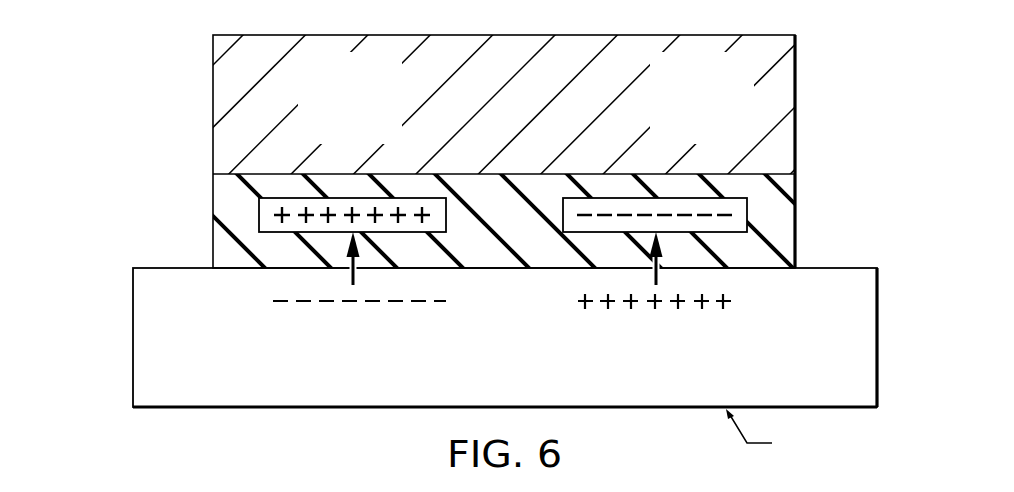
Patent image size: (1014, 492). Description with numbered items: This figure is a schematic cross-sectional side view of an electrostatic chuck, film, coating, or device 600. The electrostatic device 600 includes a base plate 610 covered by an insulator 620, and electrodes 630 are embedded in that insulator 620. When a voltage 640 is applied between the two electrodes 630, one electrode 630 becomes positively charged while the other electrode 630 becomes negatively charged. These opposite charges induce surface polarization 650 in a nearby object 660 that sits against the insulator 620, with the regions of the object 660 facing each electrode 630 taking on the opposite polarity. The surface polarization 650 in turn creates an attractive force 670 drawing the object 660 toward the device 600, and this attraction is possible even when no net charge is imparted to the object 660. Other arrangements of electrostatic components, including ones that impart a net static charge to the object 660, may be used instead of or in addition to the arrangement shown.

The electrostatic device 600 is at (77, 41).
The base plate 610 is at (780, 83).
The insulator 620 is at (780, 217).
The electrodes 630 is at (259, 213).
The voltage 640 is at (350, 213).
The surface polarization 650 is at (322, 320).
The object 660 is at (132, 337).
The attractive force 670 is at (357, 276).